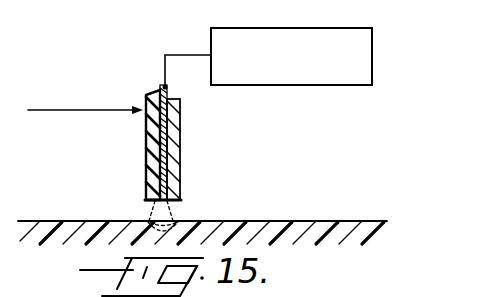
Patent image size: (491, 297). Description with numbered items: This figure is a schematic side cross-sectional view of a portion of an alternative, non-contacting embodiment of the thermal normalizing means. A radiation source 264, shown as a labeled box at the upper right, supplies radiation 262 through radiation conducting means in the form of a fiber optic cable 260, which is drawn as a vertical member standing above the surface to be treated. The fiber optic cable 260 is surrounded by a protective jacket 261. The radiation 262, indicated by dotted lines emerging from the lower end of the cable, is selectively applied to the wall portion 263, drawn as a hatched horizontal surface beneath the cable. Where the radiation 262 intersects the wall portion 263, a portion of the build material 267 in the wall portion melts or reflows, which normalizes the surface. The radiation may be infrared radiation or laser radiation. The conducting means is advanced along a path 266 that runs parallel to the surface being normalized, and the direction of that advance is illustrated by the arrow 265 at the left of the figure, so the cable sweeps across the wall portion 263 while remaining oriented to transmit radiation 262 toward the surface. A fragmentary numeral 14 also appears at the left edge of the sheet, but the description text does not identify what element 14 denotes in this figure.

The workpiece 14 is at (20, 177).
The fiber optic cable 260 is at (169, 117).
The protective jacket 261 is at (173, 142).
The radiation 262 is at (181, 220).
The wall portion 263 is at (125, 228).
The radiation source 264 is at (313, 86).
The arrow 265 is at (144, 109).
The path 266 is at (54, 93).
The build material 267 is at (180, 220).